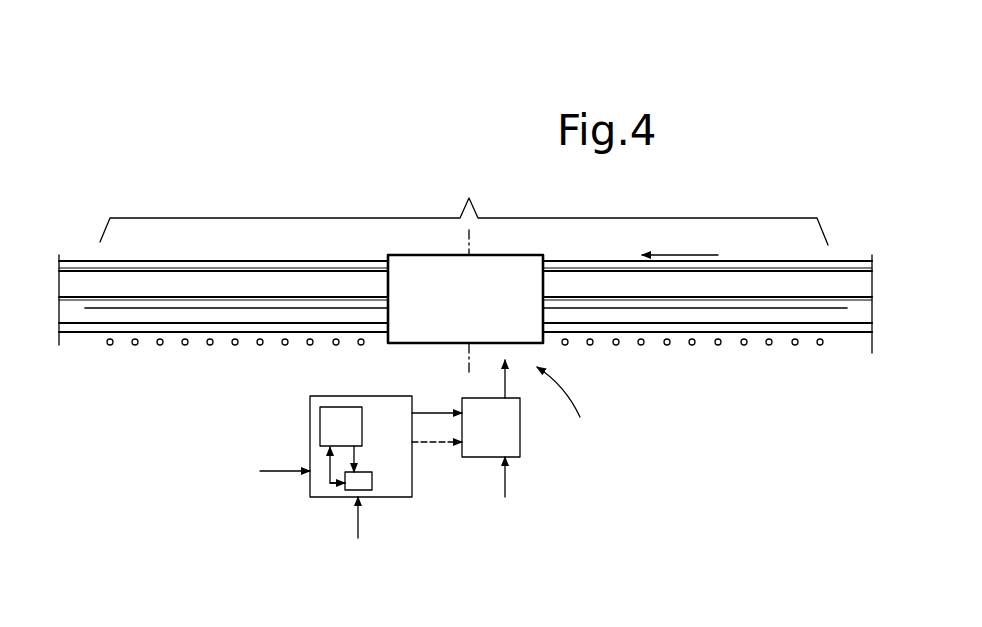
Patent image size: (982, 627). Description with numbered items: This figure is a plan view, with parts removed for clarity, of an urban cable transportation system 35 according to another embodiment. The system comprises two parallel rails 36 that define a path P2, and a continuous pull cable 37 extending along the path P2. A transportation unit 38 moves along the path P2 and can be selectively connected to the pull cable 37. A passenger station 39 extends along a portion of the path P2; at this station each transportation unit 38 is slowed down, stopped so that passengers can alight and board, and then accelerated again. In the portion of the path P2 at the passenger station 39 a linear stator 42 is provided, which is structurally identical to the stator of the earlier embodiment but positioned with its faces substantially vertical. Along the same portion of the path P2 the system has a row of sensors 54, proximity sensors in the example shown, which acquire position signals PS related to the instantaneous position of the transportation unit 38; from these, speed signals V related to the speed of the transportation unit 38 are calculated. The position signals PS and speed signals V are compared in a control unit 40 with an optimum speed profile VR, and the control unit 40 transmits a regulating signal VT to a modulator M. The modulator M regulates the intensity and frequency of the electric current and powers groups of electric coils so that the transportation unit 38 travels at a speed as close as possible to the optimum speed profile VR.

The urban cable transportation system 35 is at (283, 172).
The parallel rails 36 is at (223, 266).
The continuous pull cable 37 is at (288, 300).
The transportation unit 38 is at (485, 245).
The passenger station 39 is at (574, 399).
The control unit 40 is at (384, 454).
The linear stator 42 is at (197, 309).
The sensors 54 is at (110, 345).
The path P2 is at (677, 255).
The position signals PS is at (285, 457).
The speed signals V is at (347, 427).
The regulating signal VT is at (437, 412).
The optimum speed profile VR is at (378, 517).
The modulator M is at (508, 438).